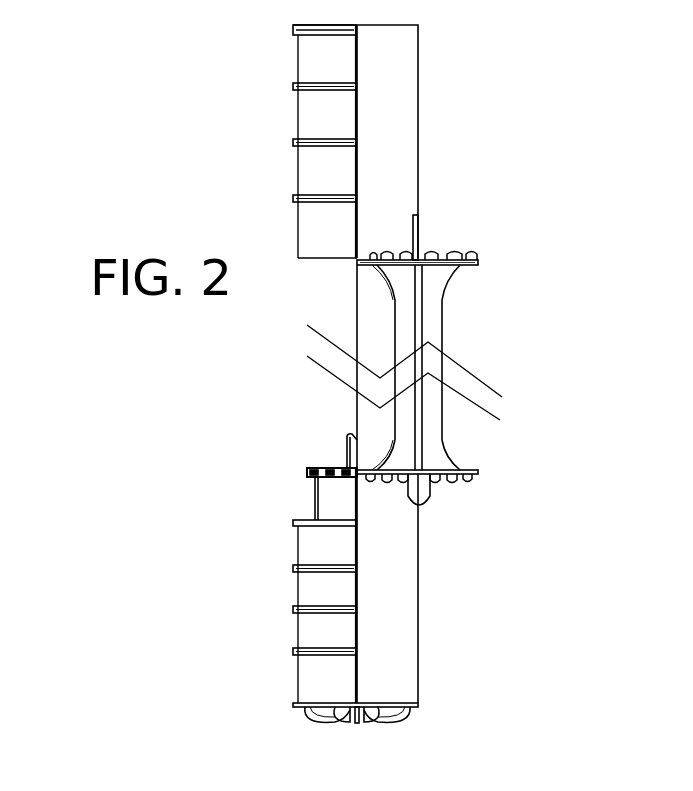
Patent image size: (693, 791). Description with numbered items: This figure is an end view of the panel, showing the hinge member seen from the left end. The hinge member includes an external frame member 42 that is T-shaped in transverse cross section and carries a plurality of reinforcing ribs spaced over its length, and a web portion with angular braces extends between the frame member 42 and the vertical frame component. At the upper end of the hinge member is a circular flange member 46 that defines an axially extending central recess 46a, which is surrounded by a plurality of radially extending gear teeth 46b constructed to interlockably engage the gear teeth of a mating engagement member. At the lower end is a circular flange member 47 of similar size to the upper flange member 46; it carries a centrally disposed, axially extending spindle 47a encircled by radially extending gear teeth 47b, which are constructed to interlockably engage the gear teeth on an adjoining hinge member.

The external frame member 42 is at (433, 312).
The circular flange member 46 is at (450, 267).
The central recess 46a is at (421, 250).
The gear teeth 46b is at (438, 256).
The circular flange member 47 is at (437, 468).
The spindle 47a is at (420, 508).
The gear teeth 47b is at (452, 481).